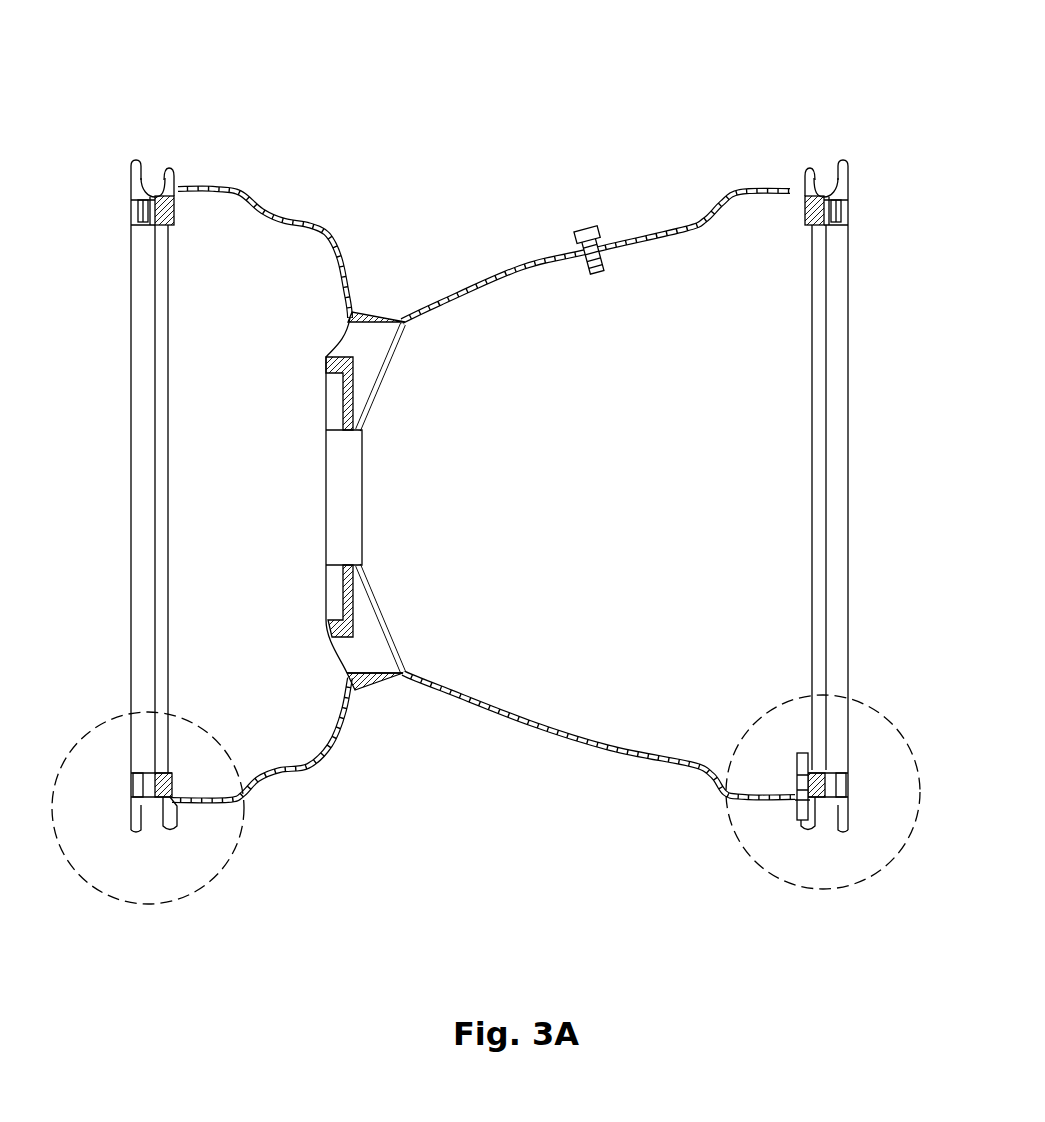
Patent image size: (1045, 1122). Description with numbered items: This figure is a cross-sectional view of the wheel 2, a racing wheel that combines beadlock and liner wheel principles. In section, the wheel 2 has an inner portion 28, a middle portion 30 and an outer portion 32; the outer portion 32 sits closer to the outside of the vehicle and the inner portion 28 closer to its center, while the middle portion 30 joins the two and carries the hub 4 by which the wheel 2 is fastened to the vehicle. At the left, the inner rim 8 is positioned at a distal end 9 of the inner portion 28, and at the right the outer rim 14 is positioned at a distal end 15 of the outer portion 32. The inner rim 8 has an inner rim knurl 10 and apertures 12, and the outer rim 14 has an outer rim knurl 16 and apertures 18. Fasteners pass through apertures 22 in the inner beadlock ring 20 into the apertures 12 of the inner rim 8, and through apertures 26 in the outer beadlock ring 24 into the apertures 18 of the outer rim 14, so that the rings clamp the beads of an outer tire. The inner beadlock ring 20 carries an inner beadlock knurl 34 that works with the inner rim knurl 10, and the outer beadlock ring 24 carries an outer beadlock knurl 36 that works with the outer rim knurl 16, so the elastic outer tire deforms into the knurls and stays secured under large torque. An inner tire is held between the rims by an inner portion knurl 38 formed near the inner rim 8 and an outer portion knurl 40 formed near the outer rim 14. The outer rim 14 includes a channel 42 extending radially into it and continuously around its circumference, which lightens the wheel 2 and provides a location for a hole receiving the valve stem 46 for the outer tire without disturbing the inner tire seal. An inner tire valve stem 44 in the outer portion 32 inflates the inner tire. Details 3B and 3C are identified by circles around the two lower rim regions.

The wheel 2 is at (574, 78).
The hub 4 is at (350, 410).
The inner rim 8 is at (178, 183).
The distal end 9 is at (180, 190).
The inner rim knurl 10 is at (163, 178).
The apertures 12 is at (172, 205).
The outer rim 14 is at (800, 185).
The distal end 15 is at (795, 190).
The outer rim knurl 16 is at (822, 170).
The apertures 18 is at (815, 207).
The inner beadlock ring 20 is at (128, 168).
The apertures 22 is at (135, 207).
The outer beadlock ring 24 is at (852, 168).
The apertures 26 is at (850, 207).
The inner portion 28 is at (268, 770).
The middle portion 30 is at (383, 683).
The outer portion 32 is at (670, 757).
The inner beadlock knurl 34 is at (148, 178).
The outer beadlock knurl 36 is at (838, 170).
The inner portion knurl 38 is at (185, 190).
The outer portion knurl 40 is at (785, 190).
The channel 42 is at (800, 825).
The inner tire valve stem 44 is at (587, 270).
The valve stem 46 is at (792, 768).
The detail circle 3B is at (165, 905).
The detail circle 3C is at (740, 848).